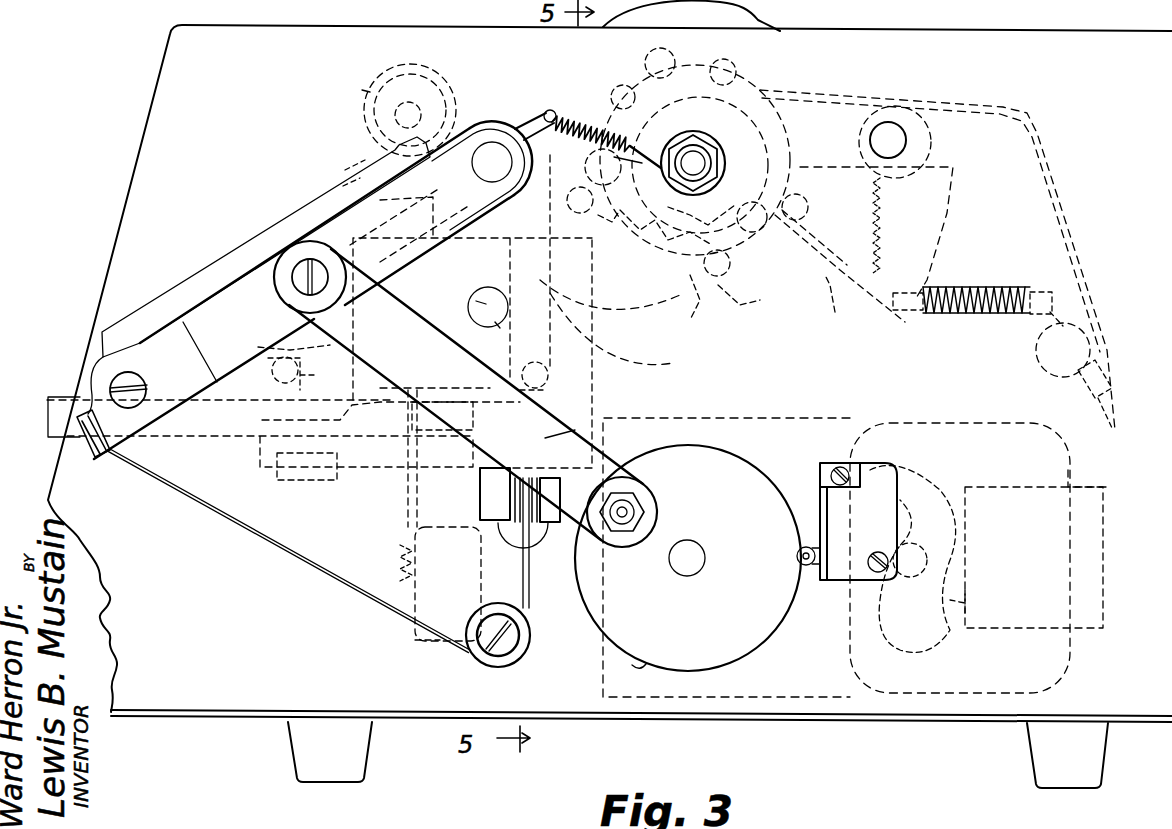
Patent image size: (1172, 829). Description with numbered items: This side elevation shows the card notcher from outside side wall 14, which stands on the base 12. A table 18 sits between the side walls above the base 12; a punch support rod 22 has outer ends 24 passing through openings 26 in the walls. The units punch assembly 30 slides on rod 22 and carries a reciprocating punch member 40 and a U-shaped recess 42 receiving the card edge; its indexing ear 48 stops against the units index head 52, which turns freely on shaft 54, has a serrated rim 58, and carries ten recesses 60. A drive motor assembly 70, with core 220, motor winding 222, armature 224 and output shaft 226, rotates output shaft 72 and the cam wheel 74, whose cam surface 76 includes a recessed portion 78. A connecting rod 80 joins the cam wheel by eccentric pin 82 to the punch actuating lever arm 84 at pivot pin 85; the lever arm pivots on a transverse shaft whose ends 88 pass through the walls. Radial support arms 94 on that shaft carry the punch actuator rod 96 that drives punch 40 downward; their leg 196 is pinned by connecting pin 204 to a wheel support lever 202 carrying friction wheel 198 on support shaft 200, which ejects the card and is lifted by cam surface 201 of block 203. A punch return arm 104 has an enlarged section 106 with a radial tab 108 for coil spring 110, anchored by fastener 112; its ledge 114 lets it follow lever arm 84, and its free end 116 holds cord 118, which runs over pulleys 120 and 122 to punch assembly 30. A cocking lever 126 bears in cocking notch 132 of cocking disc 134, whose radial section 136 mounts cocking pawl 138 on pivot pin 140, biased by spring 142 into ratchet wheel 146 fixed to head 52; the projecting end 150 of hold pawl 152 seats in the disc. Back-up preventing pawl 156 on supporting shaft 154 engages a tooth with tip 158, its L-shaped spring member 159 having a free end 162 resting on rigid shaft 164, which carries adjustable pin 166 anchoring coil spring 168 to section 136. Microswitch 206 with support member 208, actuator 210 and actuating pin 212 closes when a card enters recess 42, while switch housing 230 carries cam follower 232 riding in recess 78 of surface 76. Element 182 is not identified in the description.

The base 12 is at (862, 718).
The side wall 14 is at (165, 100).
The table 18 is at (46, 410).
The punch support rod 22 is at (476, 302).
The outer ends of the rod 24 is at (476, 302).
The openings 26 is at (500, 328).
The units punch assembly 30 is at (362, 322).
The punch member 40 is at (338, 175).
The U-shaped recess 42 is at (462, 412).
The indexing ear 48 is at (610, 321).
The units index head 52 is at (755, 50).
The shaft 54 is at (693, 163).
The enlarged diameter rim 58 is at (765, 15).
The recesses 60 is at (639, 210).
The drive motor assembly 70 is at (770, 410).
The output shaft 72 is at (705, 558).
The cam wheel 74 is at (752, 645).
The peripheral cam surface 76 is at (642, 660).
The recessed portion 78 is at (800, 516).
The connecting rod 80 is at (558, 440).
The eccentrically positioned pin 82 is at (655, 512).
The punch actuating lever arm 84 is at (368, 394).
The pivot pin 85 is at (292, 282).
The ends of the support rod 88 is at (486, 166).
The radial support arms 94 is at (462, 78).
The punch actuator rod 96 is at (395, 118).
The punch return arm 104 is at (418, 250).
The enlarged section 106 is at (462, 140).
The radial tab 108 is at (552, 112).
The coil spring 110 is at (588, 118).
The fastener 112 is at (648, 174).
The ledge 114 is at (263, 258).
The free end 116 is at (98, 452).
The cord 118 is at (238, 516).
The pulley 120 is at (517, 655).
The pulley 122 is at (530, 560).
The cocking lever 126 is at (357, 80).
The cocking notch 132 is at (660, 215).
The cocking disc 134 is at (734, 279).
The radial section 136 is at (950, 222).
The cocking pawl 138 is at (833, 302).
The pivot pin 140 is at (840, 258).
The biasing spring 142 is at (895, 238).
The ratchet wheel 146 is at (706, 301).
The projecting end 150 is at (688, 330).
The hold pawl 152 is at (646, 360).
The transverse supporting shaft 154 is at (905, 143).
The back-up preventing pawl 156 is at (900, 115).
The tip of the pawl 158 is at (760, 72).
The L shaped spring member 159 is at (1020, 103).
The free end 162 is at (1110, 362).
The rigid shaft 164 is at (1045, 366).
The adjustable pin 166 is at (1118, 424).
The coil spring 168 is at (965, 320).
The tooth 182 is at (571, 283).
The leg 196 is at (550, 373).
The friction wheel 198 is at (256, 347).
The support shaft 200 is at (305, 373).
The cam surface 201 is at (391, 413).
The wheel support lever 202 is at (270, 414).
The block 203 is at (268, 406).
The connecting pin 204 is at (546, 390).
The microswitch 206 is at (427, 657).
The support member 208 is at (400, 572).
The microswitch actuator 210 is at (418, 500).
The microswitch actuating pin 212 is at (420, 558).
The core 220 is at (1078, 462).
The motor winding 222 is at (1095, 540).
The armature 224 is at (967, 603).
The output shaft 226 is at (928, 563).
The cam operated switch housing 230 is at (890, 520).
The cam follower member 232 is at (814, 570).